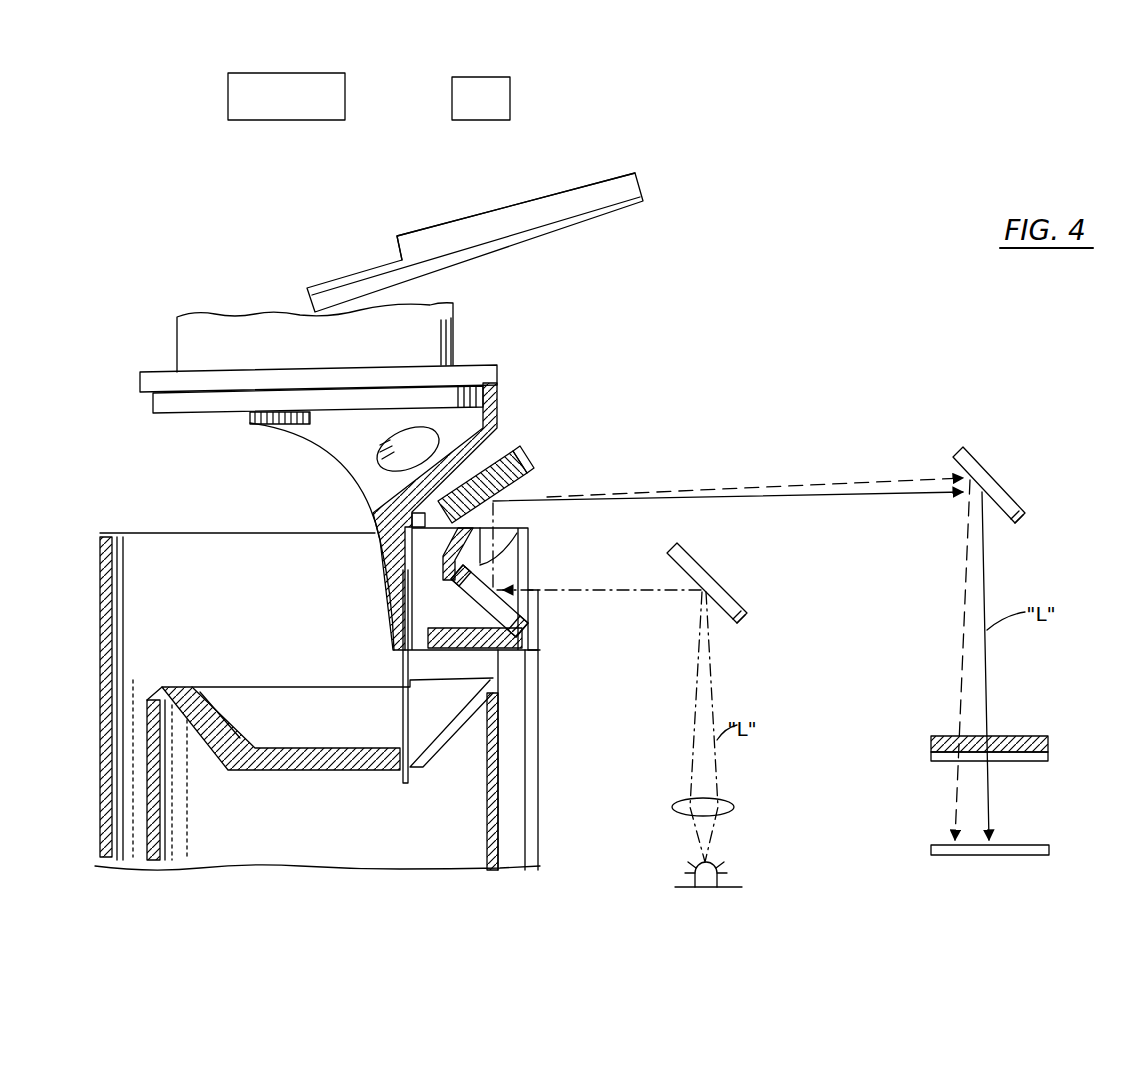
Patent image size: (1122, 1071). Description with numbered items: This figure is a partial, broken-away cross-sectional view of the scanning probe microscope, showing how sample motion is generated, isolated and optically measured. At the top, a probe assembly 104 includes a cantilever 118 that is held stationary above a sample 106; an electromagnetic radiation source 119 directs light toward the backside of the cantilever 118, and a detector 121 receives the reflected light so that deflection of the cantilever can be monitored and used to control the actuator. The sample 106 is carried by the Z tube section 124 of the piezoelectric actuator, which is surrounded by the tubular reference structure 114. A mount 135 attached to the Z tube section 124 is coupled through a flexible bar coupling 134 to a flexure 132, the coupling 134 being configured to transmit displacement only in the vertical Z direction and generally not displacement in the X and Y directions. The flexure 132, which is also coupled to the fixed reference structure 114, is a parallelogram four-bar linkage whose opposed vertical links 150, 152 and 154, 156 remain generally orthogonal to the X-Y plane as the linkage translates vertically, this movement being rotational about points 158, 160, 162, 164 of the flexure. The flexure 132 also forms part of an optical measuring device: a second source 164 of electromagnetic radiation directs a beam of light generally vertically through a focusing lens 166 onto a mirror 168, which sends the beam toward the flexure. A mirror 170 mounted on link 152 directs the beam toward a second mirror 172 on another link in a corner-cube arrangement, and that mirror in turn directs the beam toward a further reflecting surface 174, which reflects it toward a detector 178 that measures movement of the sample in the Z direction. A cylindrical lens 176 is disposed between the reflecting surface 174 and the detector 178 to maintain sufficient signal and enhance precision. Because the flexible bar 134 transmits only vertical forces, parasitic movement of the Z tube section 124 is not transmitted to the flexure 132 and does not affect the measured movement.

The probe assembly 104 is at (578, 246).
The sample 106 is at (213, 310).
The reference structure 114 is at (538, 823).
The cantilever 118 is at (345, 275).
The electromagnetic radiation source 119 is at (477, 77).
The detector 121 is at (302, 72).
The Z tube section 124 is at (495, 870).
The flexure 132 is at (250, 424).
The flexible bar coupling 134 is at (403, 713).
The mount 135 is at (247, 760).
The vertical link 150 is at (387, 553).
The vertical link 152 is at (410, 592).
The vertical link 154 is at (452, 640).
The vertical link 156 is at (507, 443).
The rotation point 158 is at (505, 512).
The rotation point 160 is at (480, 640).
The rotation point 162 is at (400, 620).
The second source of electromagnetic radiation 164 is at (380, 543).
The focusing lens 166 is at (720, 803).
The mirror 168 is at (700, 550).
The mirror 170 is at (508, 597).
The second mirror 172 is at (527, 472).
The reflecting surface 174 is at (1000, 480).
The cylindrical lens 176 is at (1029, 736).
The detector 178 is at (1024, 841).